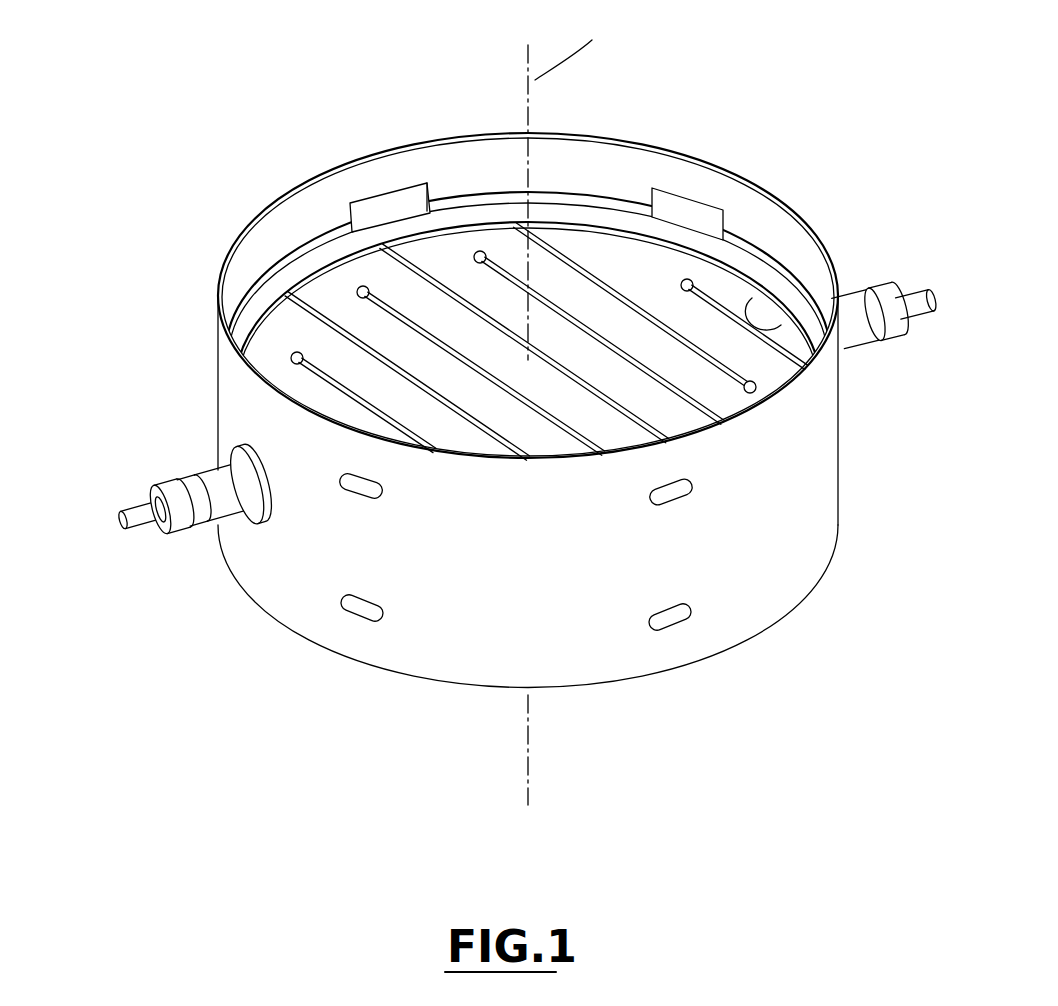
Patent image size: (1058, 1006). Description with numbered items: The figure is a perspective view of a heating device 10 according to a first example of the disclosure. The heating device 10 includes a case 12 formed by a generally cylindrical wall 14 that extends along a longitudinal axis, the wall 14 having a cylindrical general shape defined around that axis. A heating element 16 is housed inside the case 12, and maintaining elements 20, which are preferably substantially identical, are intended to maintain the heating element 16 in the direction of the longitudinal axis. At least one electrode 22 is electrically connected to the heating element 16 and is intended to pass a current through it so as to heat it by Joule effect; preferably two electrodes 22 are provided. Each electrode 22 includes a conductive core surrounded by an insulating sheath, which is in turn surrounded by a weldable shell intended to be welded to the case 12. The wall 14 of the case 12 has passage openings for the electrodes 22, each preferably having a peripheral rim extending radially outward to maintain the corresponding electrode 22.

The heating device 10 is at (175, 198).
The case 12 is at (190, 376).
The wall 14 is at (785, 525).
The heating element 16 is at (690, 370).
The maintaining elements 20 is at (392, 235).
The electrode 22 is at (100, 478).